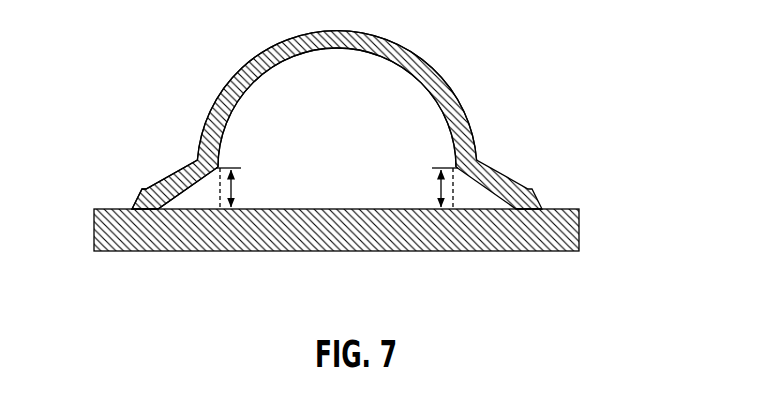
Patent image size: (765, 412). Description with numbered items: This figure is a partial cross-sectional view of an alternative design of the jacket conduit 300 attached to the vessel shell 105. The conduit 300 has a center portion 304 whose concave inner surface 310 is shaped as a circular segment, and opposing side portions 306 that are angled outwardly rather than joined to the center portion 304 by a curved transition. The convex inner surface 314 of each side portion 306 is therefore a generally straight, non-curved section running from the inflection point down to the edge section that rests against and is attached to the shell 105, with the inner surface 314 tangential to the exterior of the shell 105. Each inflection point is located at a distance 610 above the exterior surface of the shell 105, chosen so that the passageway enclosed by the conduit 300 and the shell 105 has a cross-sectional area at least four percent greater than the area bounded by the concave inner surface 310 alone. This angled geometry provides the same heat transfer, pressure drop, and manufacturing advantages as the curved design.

The vessel shell 105 is at (153, 251).
The conduit 300 is at (236, 79).
The center portion 304 is at (419, 52).
The side portion 306 is at (169, 169).
The concave inner surface 310 is at (327, 56).
The convex inner surface 314 is at (190, 193).
The distance 610 is at (241, 168).